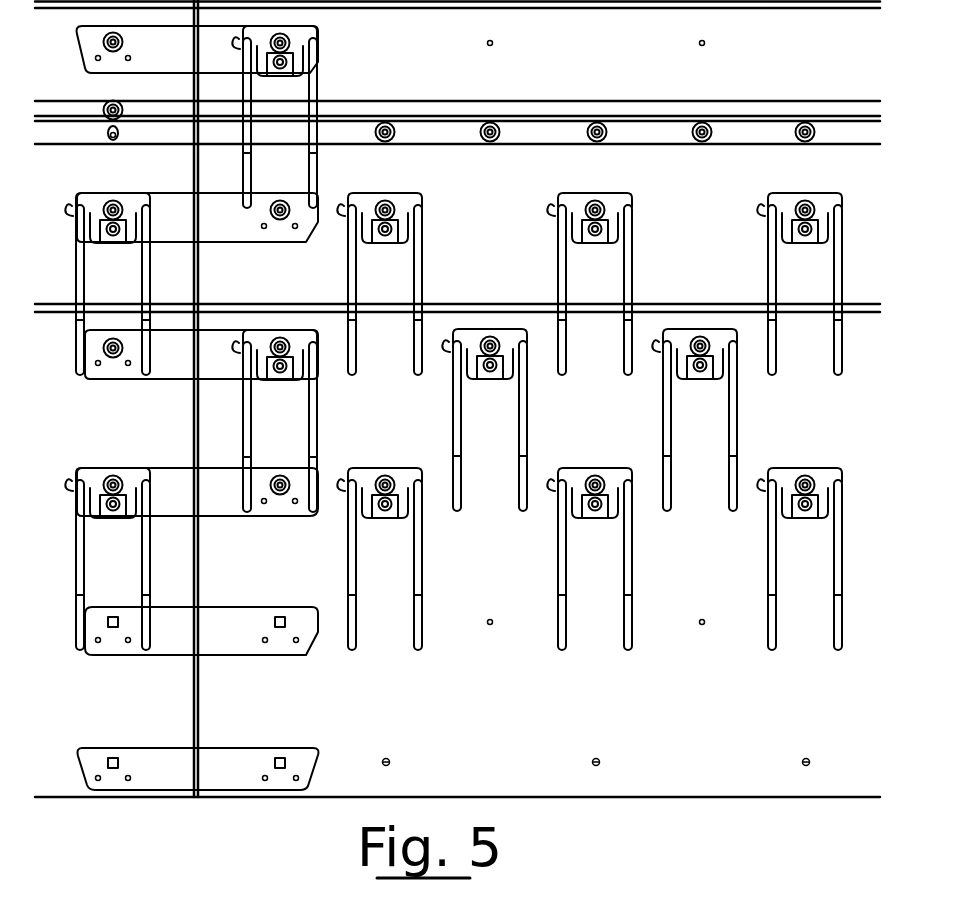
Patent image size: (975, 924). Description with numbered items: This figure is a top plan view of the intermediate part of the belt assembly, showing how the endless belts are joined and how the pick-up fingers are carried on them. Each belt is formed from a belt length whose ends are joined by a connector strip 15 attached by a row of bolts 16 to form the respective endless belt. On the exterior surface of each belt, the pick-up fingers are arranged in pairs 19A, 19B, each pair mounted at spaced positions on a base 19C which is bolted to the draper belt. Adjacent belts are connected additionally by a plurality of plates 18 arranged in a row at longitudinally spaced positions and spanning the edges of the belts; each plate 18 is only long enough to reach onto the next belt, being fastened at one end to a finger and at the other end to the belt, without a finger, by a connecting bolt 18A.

The connector strip 15 is at (553, 128).
The bolts 16 is at (598, 124).
The plates 18 is at (230, 643).
The connecting bolt 18A is at (280, 492).
The pick-up finger 19A is at (420, 630).
The pick-up finger 19B is at (355, 650).
The base 19C is at (422, 571).